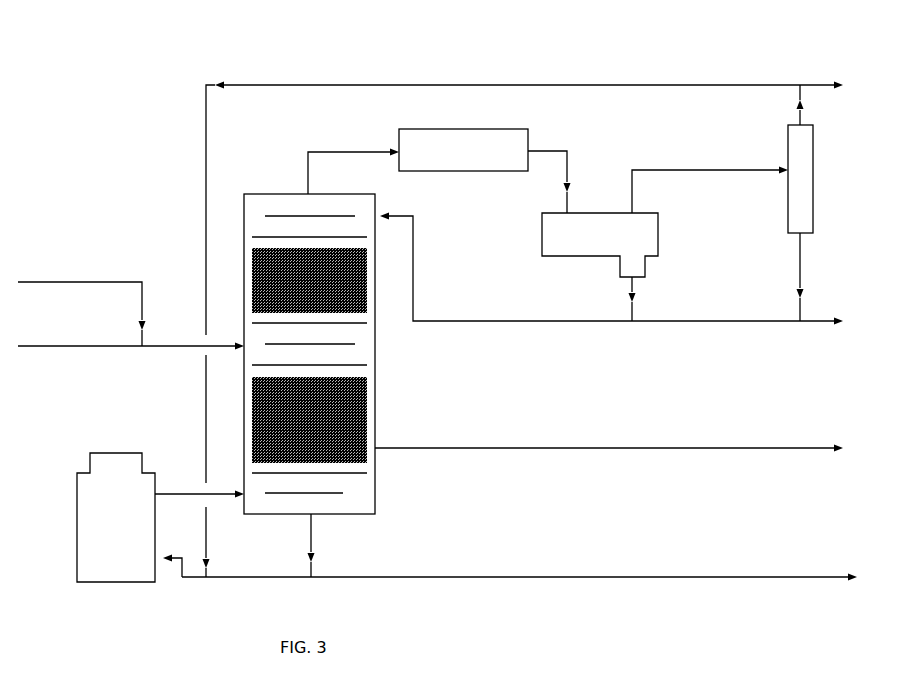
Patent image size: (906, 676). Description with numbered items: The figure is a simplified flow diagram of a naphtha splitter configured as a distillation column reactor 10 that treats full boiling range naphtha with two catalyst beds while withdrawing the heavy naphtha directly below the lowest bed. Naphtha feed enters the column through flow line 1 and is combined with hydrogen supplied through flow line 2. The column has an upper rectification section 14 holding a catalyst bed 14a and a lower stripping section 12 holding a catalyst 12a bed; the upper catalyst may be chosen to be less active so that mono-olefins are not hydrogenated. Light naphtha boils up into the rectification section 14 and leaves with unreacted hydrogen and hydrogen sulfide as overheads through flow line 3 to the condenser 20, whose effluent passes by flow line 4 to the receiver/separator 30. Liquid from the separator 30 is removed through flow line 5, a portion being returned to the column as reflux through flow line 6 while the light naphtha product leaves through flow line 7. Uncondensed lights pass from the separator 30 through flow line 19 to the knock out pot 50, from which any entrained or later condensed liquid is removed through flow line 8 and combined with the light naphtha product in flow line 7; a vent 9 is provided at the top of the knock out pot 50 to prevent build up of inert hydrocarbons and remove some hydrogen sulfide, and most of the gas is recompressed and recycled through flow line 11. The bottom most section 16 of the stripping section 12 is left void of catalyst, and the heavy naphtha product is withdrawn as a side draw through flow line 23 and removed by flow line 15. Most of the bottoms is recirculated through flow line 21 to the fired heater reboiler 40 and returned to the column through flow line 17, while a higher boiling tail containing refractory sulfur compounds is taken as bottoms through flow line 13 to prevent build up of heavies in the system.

The flow line 1 is at (45, 346).
The flow line 2 is at (72, 288).
The flow line 3 is at (330, 150).
The condensed overhead line 4 is at (570, 157).
The flow line 5 is at (628, 300).
The flow line 6 is at (534, 322).
The flow line 7 is at (742, 322).
The flow line 8 is at (797, 278).
The vent line from stripper 9 is at (805, 92).
The distillation column reactor 10 is at (266, 194).
The flow line 11 is at (436, 83).
The stripping section 12 is at (373, 383).
The catalyst 12a is at (343, 413).
The flow line 13 is at (313, 548).
The rectification section 14 is at (362, 210).
The catalyst bed 14a is at (363, 282).
The flow line 15 is at (530, 580).
The bottom most section 16 is at (363, 490).
The flow line 17 is at (181, 490).
The flow line 19 is at (690, 165).
The condenser 20 is at (463, 150).
The flow line 21 is at (275, 583).
The flow line 23 is at (762, 447).
The receiver/separator 30 is at (600, 245).
The fired heater reboiler 40 is at (116, 517).
The knock out pot 50 is at (793, 185).